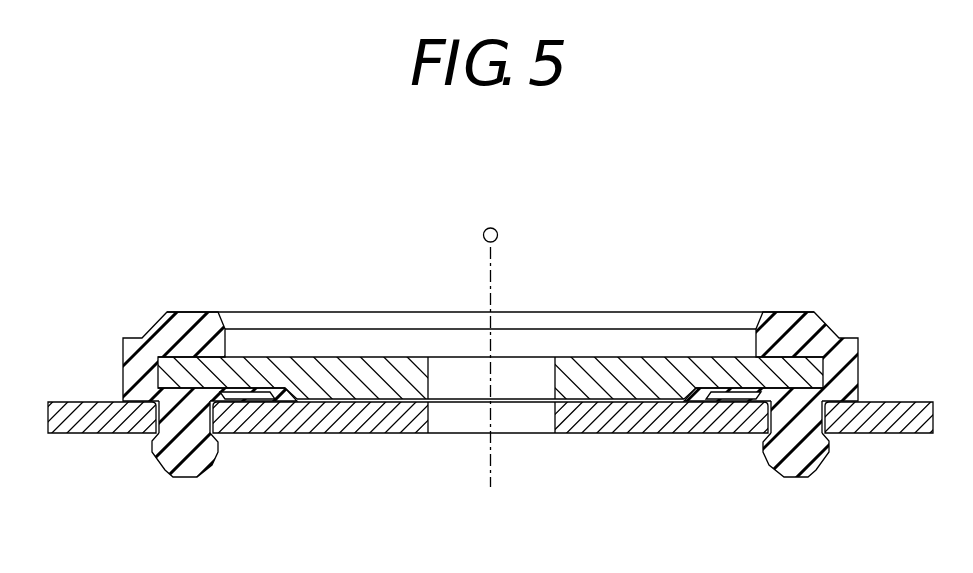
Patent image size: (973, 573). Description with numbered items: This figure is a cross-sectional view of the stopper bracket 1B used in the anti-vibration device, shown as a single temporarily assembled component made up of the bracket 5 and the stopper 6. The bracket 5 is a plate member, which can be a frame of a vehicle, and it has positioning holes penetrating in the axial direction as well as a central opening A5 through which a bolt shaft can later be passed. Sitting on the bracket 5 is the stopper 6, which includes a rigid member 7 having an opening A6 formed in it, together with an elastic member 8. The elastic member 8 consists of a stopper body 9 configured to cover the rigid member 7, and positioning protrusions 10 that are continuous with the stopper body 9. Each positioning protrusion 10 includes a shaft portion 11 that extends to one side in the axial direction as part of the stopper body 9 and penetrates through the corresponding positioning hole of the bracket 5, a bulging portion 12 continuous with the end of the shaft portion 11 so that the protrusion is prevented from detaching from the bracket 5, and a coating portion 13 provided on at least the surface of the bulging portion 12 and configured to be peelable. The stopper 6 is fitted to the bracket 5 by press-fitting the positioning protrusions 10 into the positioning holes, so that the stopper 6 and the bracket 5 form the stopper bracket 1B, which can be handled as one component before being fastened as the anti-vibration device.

The stopper bracket 1B is at (648, 236).
The bracket 5 is at (345, 425).
The stopper 6 is at (142, 260).
The rigid member 7 is at (322, 378).
The elastic member 8 is at (93, 302).
The stopper body 9 is at (157, 340).
The positioning protrusion 10 is at (173, 468).
The shaft portion 11 is at (808, 417).
The bulging portion 12 is at (803, 453).
The coating portion 13 is at (797, 478).
The opening A5 is at (518, 421).
The opening A6 is at (515, 371).